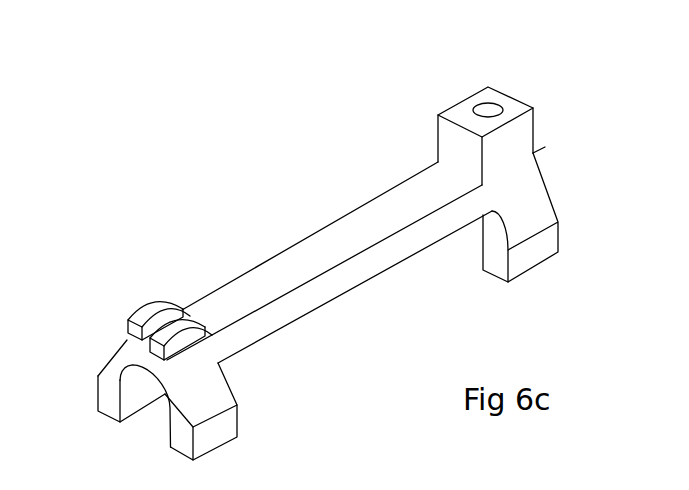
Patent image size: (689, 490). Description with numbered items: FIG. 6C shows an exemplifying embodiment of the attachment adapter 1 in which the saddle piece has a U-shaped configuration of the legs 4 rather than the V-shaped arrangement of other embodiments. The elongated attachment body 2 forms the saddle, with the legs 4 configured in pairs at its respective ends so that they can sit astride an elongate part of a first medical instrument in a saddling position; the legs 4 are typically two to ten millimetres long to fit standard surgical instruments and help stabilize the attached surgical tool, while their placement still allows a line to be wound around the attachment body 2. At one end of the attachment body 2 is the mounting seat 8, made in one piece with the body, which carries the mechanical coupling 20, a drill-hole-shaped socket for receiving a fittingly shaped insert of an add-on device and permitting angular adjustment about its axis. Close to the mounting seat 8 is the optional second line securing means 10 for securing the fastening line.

The attachment adapter 1 is at (332, 181).
The attachment body 2 is at (238, 292).
The legs 4 is at (110, 397).
The mounting seat 8 is at (512, 108).
The second line securing means 10 is at (539, 148).
The mechanical coupling 20 is at (487, 110).